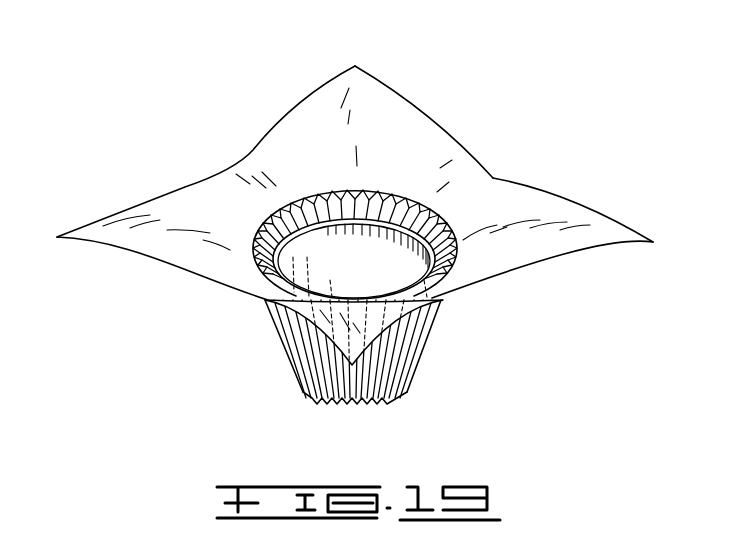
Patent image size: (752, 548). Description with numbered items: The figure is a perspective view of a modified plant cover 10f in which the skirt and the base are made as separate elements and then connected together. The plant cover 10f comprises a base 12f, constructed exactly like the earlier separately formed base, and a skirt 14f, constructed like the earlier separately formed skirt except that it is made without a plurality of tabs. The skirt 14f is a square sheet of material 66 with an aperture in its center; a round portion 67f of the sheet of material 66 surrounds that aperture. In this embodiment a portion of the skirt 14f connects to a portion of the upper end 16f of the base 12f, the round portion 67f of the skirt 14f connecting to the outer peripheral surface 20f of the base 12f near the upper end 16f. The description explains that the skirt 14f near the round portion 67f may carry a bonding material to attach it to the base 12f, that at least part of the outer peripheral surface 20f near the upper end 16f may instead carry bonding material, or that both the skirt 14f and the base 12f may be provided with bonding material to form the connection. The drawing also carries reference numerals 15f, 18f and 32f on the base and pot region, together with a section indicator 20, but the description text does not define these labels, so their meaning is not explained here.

The modified plant cover 10f is at (407, 68).
The base 12f is at (447, 312).
The skirt 14f is at (437, 123).
The cup bottom 15f is at (388, 385).
The upper end 16f is at (405, 228).
The fluted cup 18f is at (307, 395).
The outer peripheral surface 20f is at (307, 340).
The cup opening 32f is at (408, 240).
The sheet of material 66 is at (247, 150).
The round portion 67f is at (287, 311).
The section line 20- 20 is at (353, 38).